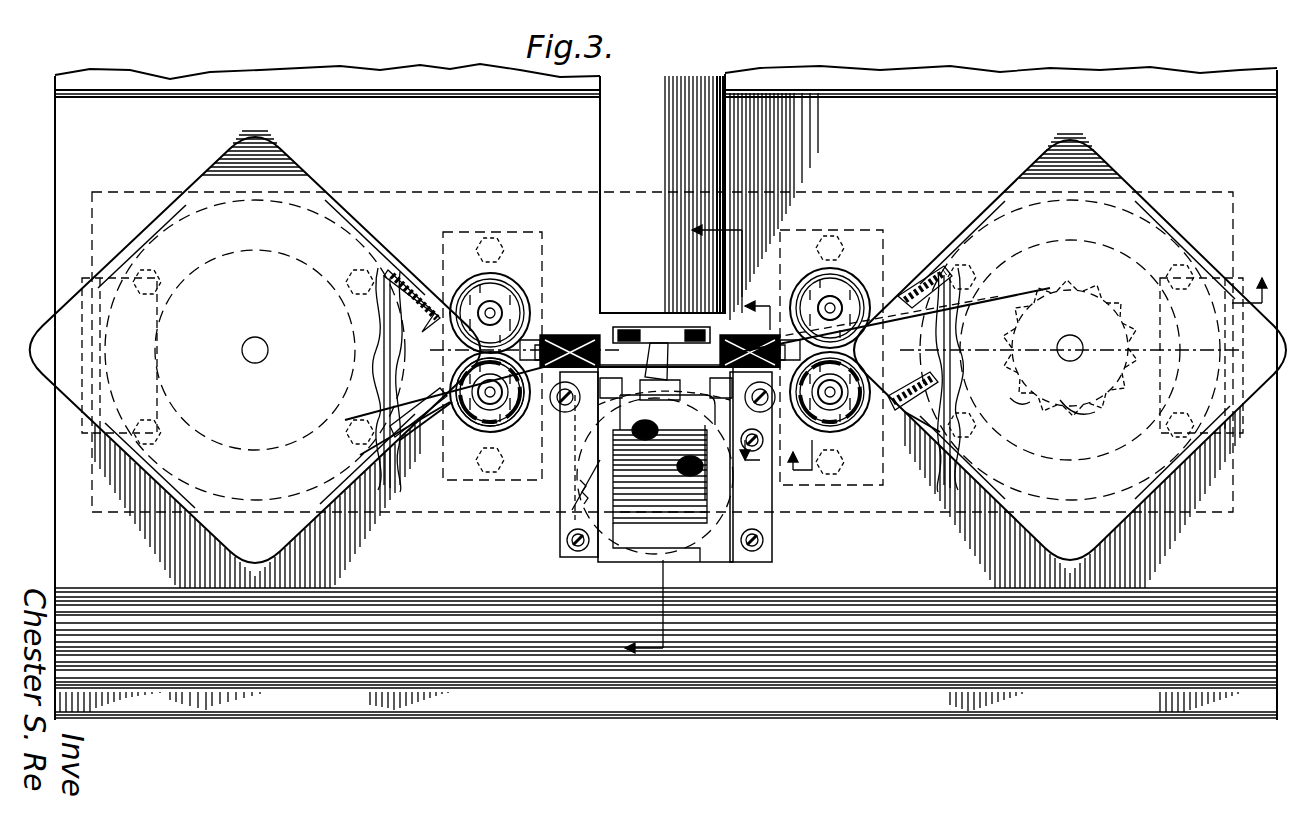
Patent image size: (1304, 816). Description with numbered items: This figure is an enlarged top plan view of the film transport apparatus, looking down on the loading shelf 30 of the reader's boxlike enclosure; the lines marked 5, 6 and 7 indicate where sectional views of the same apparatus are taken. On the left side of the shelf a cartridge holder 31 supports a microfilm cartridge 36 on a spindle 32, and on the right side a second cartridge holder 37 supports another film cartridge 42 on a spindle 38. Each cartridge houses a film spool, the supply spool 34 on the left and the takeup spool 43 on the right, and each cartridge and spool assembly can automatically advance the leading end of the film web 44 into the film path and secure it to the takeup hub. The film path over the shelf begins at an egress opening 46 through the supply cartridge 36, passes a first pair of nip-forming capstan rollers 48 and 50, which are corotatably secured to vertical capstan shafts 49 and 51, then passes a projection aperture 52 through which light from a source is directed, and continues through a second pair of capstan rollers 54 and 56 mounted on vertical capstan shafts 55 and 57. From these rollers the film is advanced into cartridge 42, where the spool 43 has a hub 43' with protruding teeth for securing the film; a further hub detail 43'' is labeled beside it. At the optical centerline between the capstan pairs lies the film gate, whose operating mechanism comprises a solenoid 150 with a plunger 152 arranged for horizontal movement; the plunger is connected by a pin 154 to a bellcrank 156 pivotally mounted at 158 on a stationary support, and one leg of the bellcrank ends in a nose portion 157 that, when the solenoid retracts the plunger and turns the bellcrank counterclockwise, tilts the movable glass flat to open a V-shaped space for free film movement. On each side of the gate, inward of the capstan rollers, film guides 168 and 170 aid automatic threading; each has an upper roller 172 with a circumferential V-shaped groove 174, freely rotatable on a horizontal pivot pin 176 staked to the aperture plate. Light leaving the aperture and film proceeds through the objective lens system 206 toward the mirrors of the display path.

The loading shelf 30 is at (948, 560).
The cartridge holder 31 is at (150, 245).
The spindle 32 is at (268, 348).
The film spool 34 is at (340, 230).
The microfilm cartridge 36 is at (285, 150).
The second cartridge holder 37 is at (1180, 480).
The spindle 38 is at (1078, 336).
The film cartridge 42 is at (1128, 165).
The spool 43 is at (1051, 276).
The hub 43' is at (1019, 408).
The ratchet pawl spring 43'' is at (1097, 418).
The film web 44 is at (421, 427).
The egress opening 46 is at (430, 290).
The capstan roller 48 is at (480, 300).
The capstan shaft 49 is at (488, 310).
The capstan roller 50 is at (490, 420).
The capstan shaft 51 is at (495, 405).
The projection aperture 52 is at (652, 328).
The capstan roller 54 is at (840, 275).
The capstan shaft 55 is at (872, 298).
The capstan roller 56 is at (838, 435).
The capstan shaft 57 is at (843, 412).
The solenoid 150 is at (636, 520).
The plunger 152 is at (602, 555).
The pin 154 is at (580, 505).
The bellcrank 156 is at (565, 412).
The nose portion 157 is at (656, 342).
The pivot 158 is at (540, 420).
The film guide 168 is at (600, 330).
The film guide 170 is at (831, 299).
The upper roller 172 is at (548, 336).
The V-shaped groove 174 is at (665, 388).
The horizontal pivot pin 176 is at (572, 340).
The objective lens system 206 is at (664, 170).
The section line 5- 5 is at (1023, 359).
The section line 6- 6 is at (672, 441).
The section line 7- 7 is at (755, 386).